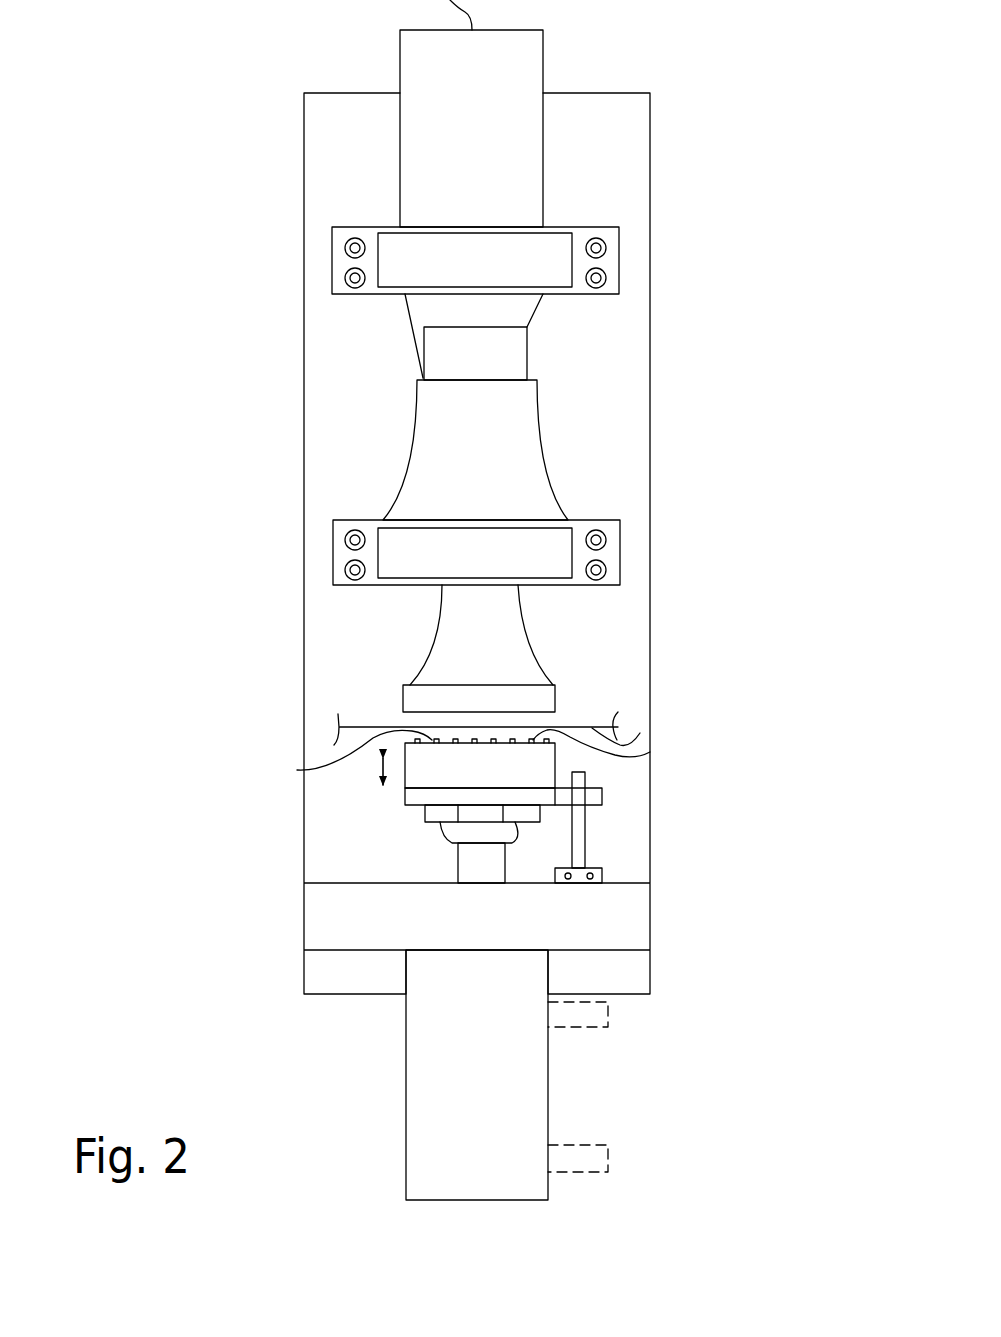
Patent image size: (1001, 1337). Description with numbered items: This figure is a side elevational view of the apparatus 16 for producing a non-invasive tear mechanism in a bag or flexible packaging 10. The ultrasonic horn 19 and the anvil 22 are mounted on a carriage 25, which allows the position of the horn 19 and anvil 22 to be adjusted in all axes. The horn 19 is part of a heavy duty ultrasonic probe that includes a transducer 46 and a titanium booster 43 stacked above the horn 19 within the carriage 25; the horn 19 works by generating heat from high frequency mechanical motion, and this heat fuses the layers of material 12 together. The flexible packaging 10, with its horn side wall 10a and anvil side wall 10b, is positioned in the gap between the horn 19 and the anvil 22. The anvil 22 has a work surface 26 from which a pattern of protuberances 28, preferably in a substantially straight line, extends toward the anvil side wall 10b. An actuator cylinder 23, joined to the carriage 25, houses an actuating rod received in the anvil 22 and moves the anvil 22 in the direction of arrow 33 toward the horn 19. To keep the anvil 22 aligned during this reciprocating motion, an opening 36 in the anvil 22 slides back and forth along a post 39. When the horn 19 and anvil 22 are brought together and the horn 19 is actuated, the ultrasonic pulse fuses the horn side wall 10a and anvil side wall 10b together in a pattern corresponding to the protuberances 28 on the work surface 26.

The ultrasonic welding apparatus 16 is at (226, 235).
The transducer 46 is at (425, 165).
The carriage 25 is at (623, 332).
The titanium booster 43 is at (435, 447).
The ultrasonic horn 19 is at (455, 652).
The flexible packaging 10 is at (372, 726).
The layers of material 12 is at (562, 726).
The horn side wall 10a is at (580, 726).
The anvil side wall 10b is at (640, 733).
The work surface 26 is at (650, 752).
The pattern of protuberances 28 is at (297, 770).
The anvil 22 is at (435, 778).
The arrow 33 is at (378, 773).
The opening 36 is at (593, 783).
The post 39 is at (587, 837).
The actuator cylinder 23 is at (463, 1077).